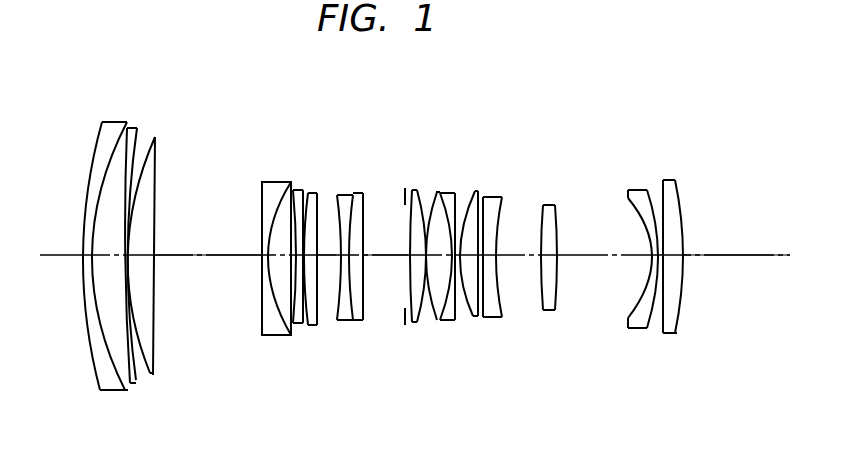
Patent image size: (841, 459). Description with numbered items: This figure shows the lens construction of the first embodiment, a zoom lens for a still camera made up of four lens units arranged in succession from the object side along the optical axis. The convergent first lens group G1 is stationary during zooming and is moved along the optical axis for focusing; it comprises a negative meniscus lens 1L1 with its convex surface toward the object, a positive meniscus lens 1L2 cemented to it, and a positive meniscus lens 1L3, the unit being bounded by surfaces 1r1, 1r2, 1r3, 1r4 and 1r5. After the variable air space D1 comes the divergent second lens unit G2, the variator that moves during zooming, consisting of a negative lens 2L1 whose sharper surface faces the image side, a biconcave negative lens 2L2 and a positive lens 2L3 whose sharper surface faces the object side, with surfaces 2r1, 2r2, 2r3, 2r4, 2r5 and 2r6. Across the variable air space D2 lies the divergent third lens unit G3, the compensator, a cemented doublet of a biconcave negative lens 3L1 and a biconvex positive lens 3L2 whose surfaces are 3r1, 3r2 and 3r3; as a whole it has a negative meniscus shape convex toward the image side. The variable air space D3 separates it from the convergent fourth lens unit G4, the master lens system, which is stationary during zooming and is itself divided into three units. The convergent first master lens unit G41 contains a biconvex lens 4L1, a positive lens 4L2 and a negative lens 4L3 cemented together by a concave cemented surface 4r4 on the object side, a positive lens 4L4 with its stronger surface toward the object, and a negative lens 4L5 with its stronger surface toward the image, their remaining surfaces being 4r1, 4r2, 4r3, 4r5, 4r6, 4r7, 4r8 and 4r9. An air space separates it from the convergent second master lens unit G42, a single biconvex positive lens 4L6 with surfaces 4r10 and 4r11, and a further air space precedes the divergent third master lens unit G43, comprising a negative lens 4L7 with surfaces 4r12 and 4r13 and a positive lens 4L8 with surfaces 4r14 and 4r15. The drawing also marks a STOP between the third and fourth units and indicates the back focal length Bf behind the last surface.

The first lens group G1 is at (190, 78).
The negative meniscus lens 1L1 is at (104, 124).
The positive meniscus lens 1L2 is at (132, 126).
The positive meniscus lens 1L3 is at (156, 136).
The first surface of first lens unit 1r1 is at (99, 384).
The second surface of first lens unit 1r2 is at (122, 382).
The third surface of first lens unit 1r3 is at (138, 386).
The fourth surface of first lens unit 1r4 is at (145, 377).
The fifth surface of first lens unit 1r5 is at (156, 358).
The second lens unit G2 is at (337, 115).
The negative lens 2L1 is at (268, 180).
The biconcave negative lens 2L2 is at (297, 188).
The positive lens 2L3 is at (312, 191).
The first surface of second lens unit 2r1 is at (264, 314).
The second surface of second lens unit 2r2 is at (288, 320).
The third surface of second lens unit 2r3 is at (294, 326).
The fourth surface of second lens unit 2r4 is at (300, 328).
The fifth surface of second lens unit 2r5 is at (310, 327).
The sixth surface of second lens unit 2r6 is at (320, 315).
The third lens unit G3 is at (380, 163).
The biconcave negative lens 3L1 is at (342, 196).
The biconvex positive lens 3L2 is at (359, 194).
The first surface of third lens unit 3r1 is at (343, 322).
The second surface of third lens unit 3r2 is at (352, 321).
The third surface of third lens unit 3r3 is at (365, 316).
The fourth lens unit G4 is at (668, 90).
The first master lens unit G41 is at (573, 116).
The second master lens unit G42 is at (525, 171).
The third master lens unit G43 is at (595, 116).
The biconvex lens 4L1 is at (412, 188).
The positive lens 4L2 is at (437, 190).
The negative lens 4L3 is at (448, 190).
The positive lens 4L4 is at (476, 190).
The negative lens 4L5 is at (492, 196).
The biconvex positive lens 4L6 is at (549, 204).
The negative lens 4L7 is at (637, 190).
The positive lens 4L8 is at (669, 180).
The first surface of fourth lens unit 4r1 is at (409, 283).
The second surface of fourth lens unit 4r2 is at (410, 324).
The third surface of fourth lens unit 4r3 is at (434, 322).
The fourth surface of fourth lens unit 4r4 is at (440, 323).
The fifth surface of fourth lens unit 4r5 is at (456, 322).
The sixth surface of fourth lens unit 4r6 is at (468, 318).
The seventh surface of fourth lens unit 4r7 is at (478, 318).
The eighth surface of fourth lens unit 4r8 is at (487, 319).
The ninth surface of fourth lens unit 4r9 is at (501, 297).
The tenth surface of fourth lens unit 4r10 is at (543, 312).
The eleventh surface of fourth lens unit 4r11 is at (558, 306).
The twelfth surface of fourth lens unit 4r12 is at (628, 320).
The thirteenth surface of fourth lens unit 4r13 is at (628, 326).
The fourteenth surface of fourth lens unit 4r14 is at (663, 325).
The fifteenth surface of fourth lens unit 4r15 is at (681, 322).
The air space between first and second lens units D1 is at (207, 246).
The air space between second and third lens units D2 is at (330, 255).
The air space between third and fourth lens units D3 is at (386, 245).
The back focal length Bf is at (737, 245).
The aperture stop STOP is at (403, 322).